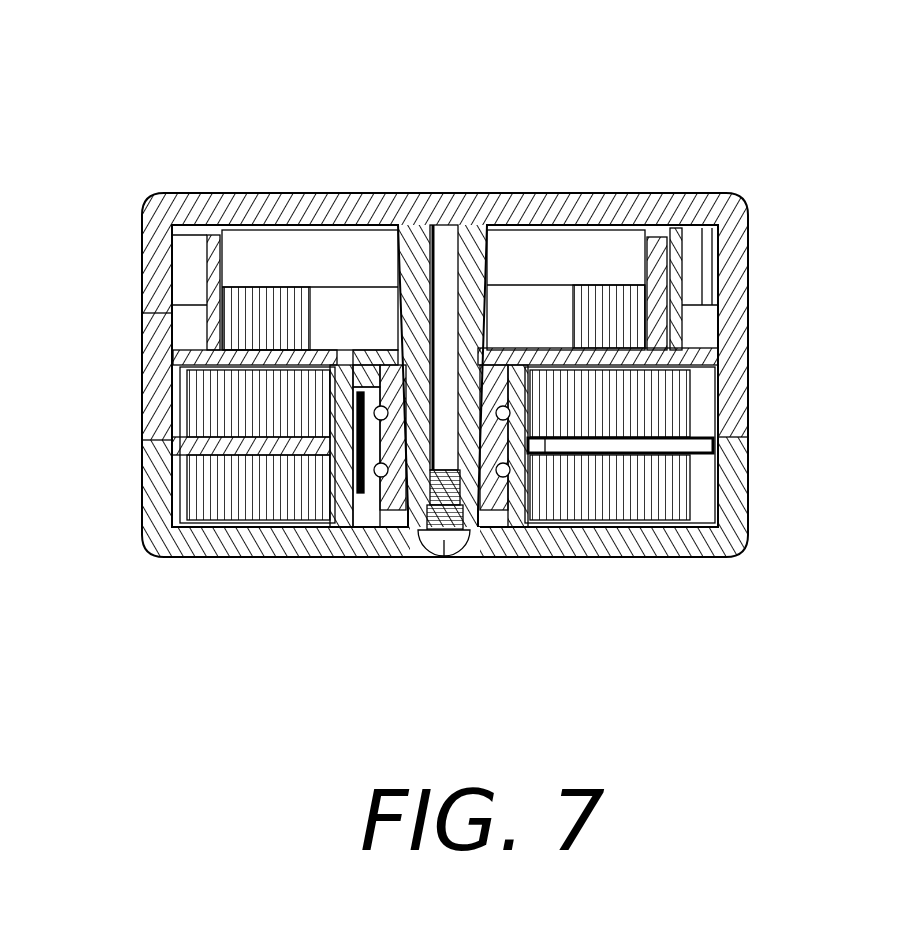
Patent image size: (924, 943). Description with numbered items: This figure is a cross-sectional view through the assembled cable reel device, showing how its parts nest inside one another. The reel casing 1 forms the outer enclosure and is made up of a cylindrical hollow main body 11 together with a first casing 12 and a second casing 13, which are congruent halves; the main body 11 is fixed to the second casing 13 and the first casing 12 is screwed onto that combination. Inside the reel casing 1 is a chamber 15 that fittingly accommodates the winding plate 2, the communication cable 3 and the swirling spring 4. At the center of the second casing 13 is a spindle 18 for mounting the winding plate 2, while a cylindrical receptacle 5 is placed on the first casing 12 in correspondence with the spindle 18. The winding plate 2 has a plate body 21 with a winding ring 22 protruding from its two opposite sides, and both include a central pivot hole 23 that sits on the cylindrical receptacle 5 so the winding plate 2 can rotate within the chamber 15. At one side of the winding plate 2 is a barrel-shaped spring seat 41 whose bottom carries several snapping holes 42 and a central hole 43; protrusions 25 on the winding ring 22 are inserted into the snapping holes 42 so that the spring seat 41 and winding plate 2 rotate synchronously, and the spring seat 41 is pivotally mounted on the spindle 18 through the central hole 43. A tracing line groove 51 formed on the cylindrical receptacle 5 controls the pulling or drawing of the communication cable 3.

The reel casing 1 is at (462, 188).
The winding plate 2 is at (165, 442).
The communication cable 3 is at (653, 413).
The swirling spring 4 is at (597, 302).
The cylindrical receptacle 5 is at (493, 497).
The main body 11 is at (157, 393).
The first casing 12 is at (203, 540).
The second casing 13 is at (213, 223).
The chamber 15 is at (698, 487).
The spindle 18 is at (475, 273).
The plate body 21 is at (215, 452).
The winding ring 22 is at (337, 487).
The central pivot hole 23 is at (520, 450).
The protrusions 25 is at (337, 347).
The spring seat 41 is at (650, 280).
The snapping holes 42 is at (383, 340).
The central hole 43 is at (527, 347).
The tracing line groove 51 is at (352, 500).